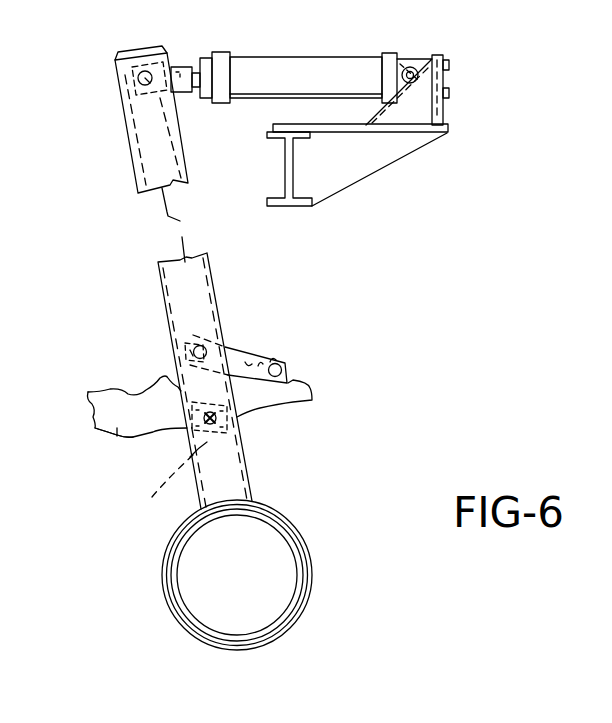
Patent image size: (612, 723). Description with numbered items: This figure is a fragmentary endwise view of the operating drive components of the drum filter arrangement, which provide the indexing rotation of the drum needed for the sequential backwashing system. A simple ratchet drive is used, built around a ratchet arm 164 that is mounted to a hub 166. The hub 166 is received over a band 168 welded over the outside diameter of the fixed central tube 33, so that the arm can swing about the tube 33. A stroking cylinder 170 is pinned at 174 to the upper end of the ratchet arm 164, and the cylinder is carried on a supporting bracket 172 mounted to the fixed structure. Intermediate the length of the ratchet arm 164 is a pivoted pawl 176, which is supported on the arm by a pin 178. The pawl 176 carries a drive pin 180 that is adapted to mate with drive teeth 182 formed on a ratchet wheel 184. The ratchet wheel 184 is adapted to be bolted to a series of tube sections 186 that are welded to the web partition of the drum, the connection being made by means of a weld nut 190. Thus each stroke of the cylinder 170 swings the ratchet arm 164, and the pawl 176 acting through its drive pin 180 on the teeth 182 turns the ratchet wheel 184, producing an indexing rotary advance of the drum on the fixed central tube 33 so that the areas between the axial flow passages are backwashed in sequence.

The tube 33 is at (177, 575).
The ratchet arm 164 is at (213, 272).
The hub 166 is at (292, 521).
The band 168 is at (293, 590).
The stroking cylinder 170 is at (358, 52).
The mounting bracket 172 is at (400, 153).
The pin connection 174 is at (143, 78).
The pivoted pawl 176 is at (238, 347).
The pin 178 is at (195, 339).
The drive pin 180 is at (288, 363).
The drive teeth 182 is at (88, 392).
The ratchet wheel 184 is at (117, 433).
The tube sections 186 is at (158, 492).
The weld nut 190 is at (238, 428).